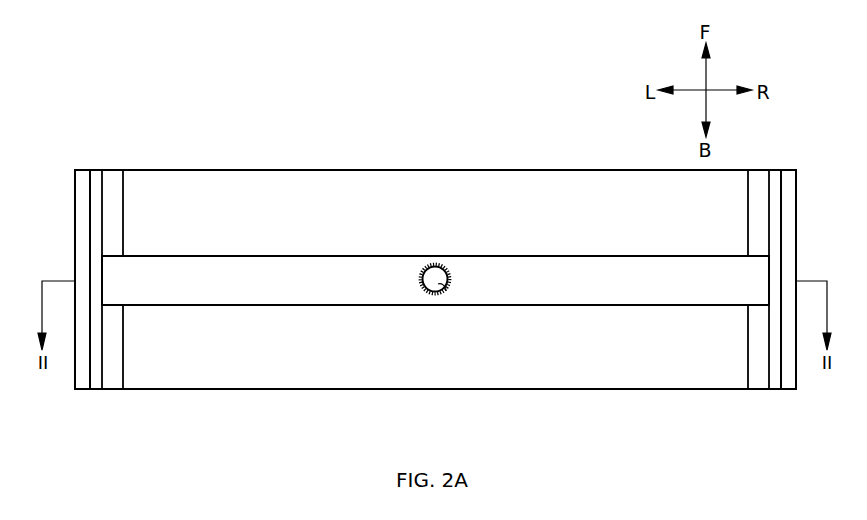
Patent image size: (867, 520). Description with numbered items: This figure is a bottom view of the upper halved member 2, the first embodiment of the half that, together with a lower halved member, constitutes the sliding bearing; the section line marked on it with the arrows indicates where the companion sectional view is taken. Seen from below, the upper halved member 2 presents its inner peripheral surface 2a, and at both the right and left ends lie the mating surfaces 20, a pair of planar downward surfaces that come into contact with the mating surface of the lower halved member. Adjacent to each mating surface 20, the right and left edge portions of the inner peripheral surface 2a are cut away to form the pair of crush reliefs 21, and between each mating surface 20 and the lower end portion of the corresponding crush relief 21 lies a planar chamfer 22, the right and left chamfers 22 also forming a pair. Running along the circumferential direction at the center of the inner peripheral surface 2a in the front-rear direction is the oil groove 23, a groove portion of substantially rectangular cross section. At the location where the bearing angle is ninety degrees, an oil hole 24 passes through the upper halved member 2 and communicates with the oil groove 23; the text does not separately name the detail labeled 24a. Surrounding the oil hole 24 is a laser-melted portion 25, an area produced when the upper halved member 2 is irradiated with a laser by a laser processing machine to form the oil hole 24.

The upper halved member 2 is at (212, 160).
The inner peripheral surface 2a is at (565, 352).
The mating surface 20 is at (84, 377).
The crush relief 21 is at (113, 338).
The chamfer 22 is at (96, 360).
The oil groove 23 is at (253, 303).
The oil hole 24 is at (434, 272).
The hole wall 24a is at (446, 291).
The laser-melted portion 25 is at (419, 279).